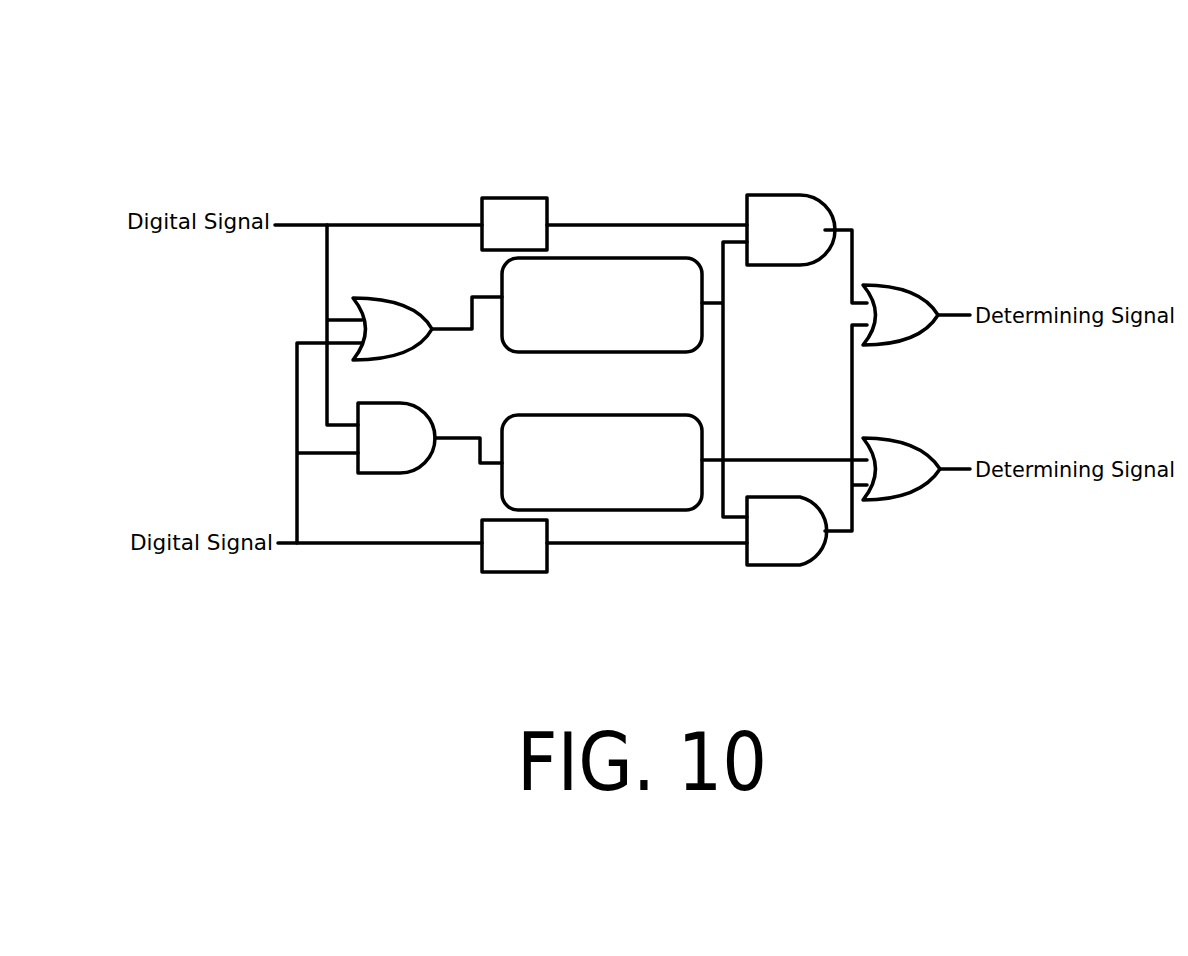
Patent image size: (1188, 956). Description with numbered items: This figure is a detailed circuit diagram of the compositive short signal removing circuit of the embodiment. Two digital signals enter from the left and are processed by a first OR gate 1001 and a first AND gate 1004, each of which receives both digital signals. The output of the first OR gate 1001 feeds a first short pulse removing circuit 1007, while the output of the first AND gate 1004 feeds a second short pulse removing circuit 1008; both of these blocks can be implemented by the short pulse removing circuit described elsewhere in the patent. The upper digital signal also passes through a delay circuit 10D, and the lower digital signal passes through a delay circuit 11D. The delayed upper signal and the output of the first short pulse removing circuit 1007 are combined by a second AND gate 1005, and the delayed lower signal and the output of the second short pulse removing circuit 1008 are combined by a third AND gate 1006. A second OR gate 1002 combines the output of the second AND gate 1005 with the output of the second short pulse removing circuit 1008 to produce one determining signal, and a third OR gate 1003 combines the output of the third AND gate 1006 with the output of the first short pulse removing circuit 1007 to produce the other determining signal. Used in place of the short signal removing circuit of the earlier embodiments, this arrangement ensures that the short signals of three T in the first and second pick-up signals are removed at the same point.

The first OR gate 1001 is at (385, 300).
The second OR gate 1002 is at (915, 287).
The third OR gate 1003 is at (890, 500).
The first AND gate 1004 is at (385, 477).
The second AND gate 1005 is at (768, 195).
The third AND gate 1006 is at (787, 565).
The first short pulse removing circuit 1007 is at (603, 255).
The second short pulse removing circuit 1008 is at (605, 512).
The delay circuit 10D is at (505, 212).
The delay circuit 11D is at (497, 548).